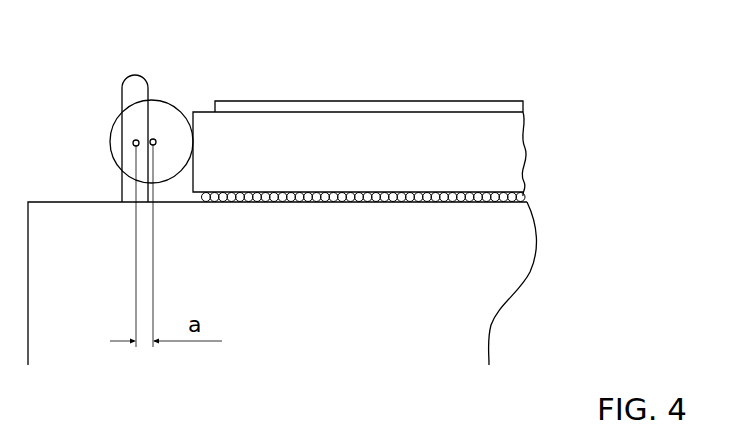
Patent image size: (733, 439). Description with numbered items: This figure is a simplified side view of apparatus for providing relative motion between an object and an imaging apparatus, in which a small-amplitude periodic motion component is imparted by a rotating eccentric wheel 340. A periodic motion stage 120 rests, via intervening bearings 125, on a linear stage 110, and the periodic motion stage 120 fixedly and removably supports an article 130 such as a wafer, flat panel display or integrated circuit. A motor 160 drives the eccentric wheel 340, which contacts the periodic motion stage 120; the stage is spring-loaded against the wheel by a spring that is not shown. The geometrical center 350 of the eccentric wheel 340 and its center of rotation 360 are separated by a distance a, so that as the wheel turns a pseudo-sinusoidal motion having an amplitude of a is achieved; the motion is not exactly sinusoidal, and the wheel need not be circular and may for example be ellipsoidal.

The linear stage 110 is at (323, 296).
The periodic motion stage 120 is at (372, 171).
The bearings 125 is at (527, 197).
The article 130 is at (400, 112).
The motor 160 is at (135, 88).
The eccentric wheel 340 is at (177, 132).
The geometrical center 350 is at (154, 139).
The center of rotation 360 is at (133, 144).